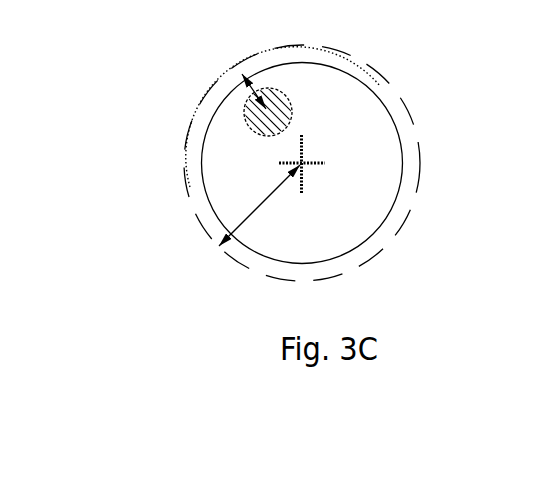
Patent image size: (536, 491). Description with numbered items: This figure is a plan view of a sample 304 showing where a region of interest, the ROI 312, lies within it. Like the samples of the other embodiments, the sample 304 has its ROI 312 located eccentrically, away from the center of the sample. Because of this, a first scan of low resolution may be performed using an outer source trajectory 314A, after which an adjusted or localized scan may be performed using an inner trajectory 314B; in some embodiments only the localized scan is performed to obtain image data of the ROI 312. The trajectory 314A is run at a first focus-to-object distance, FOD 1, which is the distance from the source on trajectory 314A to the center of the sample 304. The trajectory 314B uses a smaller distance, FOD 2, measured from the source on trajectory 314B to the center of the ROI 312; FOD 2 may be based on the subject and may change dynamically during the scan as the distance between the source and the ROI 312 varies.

The sample 304 is at (392, 212).
The ROI 312 is at (250, 133).
The trajectory 314A is at (421, 162).
The trajectory 314B is at (375, 79).
The first FOD FOD 1 is at (251, 212).
The second FOD FOD 2 is at (257, 88).